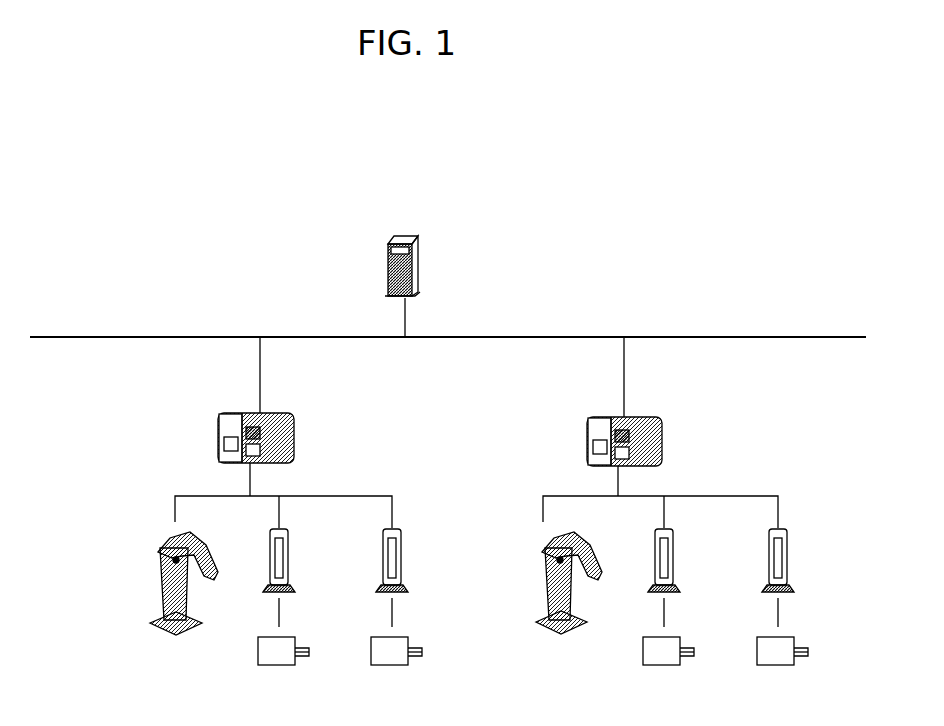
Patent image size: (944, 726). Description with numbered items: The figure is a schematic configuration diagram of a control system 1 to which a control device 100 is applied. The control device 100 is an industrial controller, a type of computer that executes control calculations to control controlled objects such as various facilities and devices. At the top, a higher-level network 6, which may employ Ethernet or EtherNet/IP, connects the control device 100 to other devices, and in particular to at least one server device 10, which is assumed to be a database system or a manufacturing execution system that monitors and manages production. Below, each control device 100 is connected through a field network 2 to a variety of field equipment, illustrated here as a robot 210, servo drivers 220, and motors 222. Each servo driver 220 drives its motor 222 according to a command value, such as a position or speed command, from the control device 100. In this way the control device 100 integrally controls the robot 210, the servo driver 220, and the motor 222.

The control system 1 is at (787, 216).
The field network 2 is at (339, 496).
The higher-level network 6 is at (544, 337).
The server device 10 is at (413, 238).
The control device 100 is at (293, 421).
The robot 210 is at (160, 553).
The servo driver 220 is at (290, 558).
The motor 222 is at (296, 643).